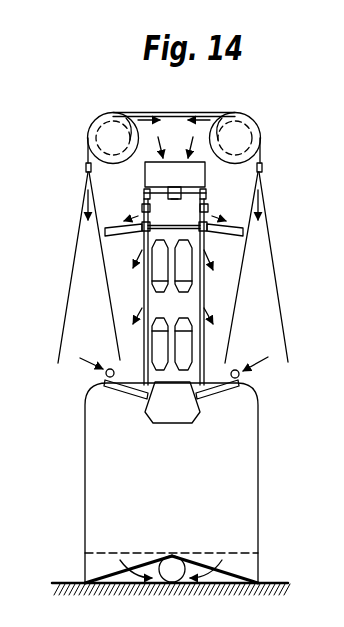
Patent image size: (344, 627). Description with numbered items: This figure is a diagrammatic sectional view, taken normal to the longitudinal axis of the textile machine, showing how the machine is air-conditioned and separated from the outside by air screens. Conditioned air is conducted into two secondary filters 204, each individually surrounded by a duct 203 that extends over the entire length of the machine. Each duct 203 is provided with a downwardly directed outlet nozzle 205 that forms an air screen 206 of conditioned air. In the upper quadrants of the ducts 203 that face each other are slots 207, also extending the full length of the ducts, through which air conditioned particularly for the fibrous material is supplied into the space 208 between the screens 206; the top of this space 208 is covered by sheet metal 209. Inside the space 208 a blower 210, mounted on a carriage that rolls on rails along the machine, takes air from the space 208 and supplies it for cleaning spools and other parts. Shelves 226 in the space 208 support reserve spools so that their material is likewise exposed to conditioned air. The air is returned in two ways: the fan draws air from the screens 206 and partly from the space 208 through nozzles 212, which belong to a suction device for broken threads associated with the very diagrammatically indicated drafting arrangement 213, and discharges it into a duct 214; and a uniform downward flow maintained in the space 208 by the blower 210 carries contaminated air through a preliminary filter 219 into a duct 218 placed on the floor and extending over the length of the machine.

The duct 203 is at (89, 128).
The secondary filter 204 is at (109, 119).
The outlet nozzle 205 is at (86, 166).
The air screen 206 is at (262, 272).
The slot 207 is at (219, 116).
The space 208 is at (232, 207).
The sheet metal 209 is at (175, 112).
The blower 210 is at (195, 176).
The nozzle 212 is at (241, 383).
The drafting arrangement 213 is at (174, 353).
The duct 214 is at (177, 419).
The duct 218 is at (176, 556).
The preliminary filter 219 is at (243, 572).
The shelf 226 is at (223, 231).